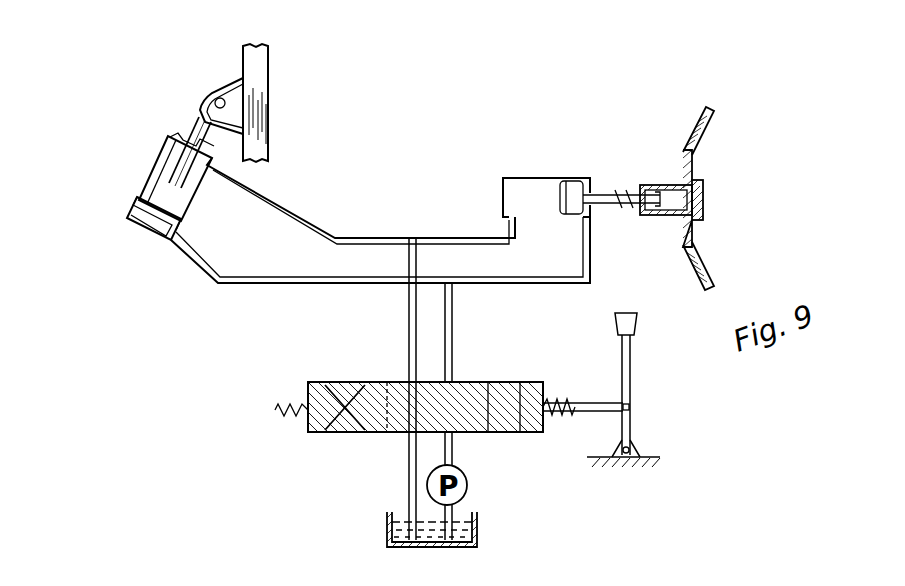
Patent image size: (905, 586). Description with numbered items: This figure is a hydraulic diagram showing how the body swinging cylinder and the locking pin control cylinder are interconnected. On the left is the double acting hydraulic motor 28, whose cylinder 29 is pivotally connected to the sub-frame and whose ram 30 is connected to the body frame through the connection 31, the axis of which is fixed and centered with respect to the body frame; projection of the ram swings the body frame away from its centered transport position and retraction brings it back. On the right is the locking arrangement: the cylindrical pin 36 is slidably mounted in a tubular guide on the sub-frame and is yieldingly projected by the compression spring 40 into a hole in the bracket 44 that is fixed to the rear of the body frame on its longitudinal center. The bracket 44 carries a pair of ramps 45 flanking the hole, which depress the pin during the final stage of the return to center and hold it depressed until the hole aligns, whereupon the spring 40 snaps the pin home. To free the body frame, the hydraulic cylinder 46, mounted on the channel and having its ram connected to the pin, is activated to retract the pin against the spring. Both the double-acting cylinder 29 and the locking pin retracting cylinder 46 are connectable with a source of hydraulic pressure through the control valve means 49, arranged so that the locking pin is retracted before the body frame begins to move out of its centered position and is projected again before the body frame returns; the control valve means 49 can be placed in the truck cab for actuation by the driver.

The double acting hydraulic motor 28 is at (122, 172).
The cylinder 29 is at (130, 210).
The ram 30 is at (197, 142).
The connection 31 is at (197, 100).
The cylindrical pin 36 is at (688, 200).
The compression spring 40 is at (631, 198).
The bracket 44 is at (694, 173).
The ramps 45 is at (708, 128).
The hydraulic cylinder 46 is at (575, 180).
The control valve means 49 is at (526, 371).